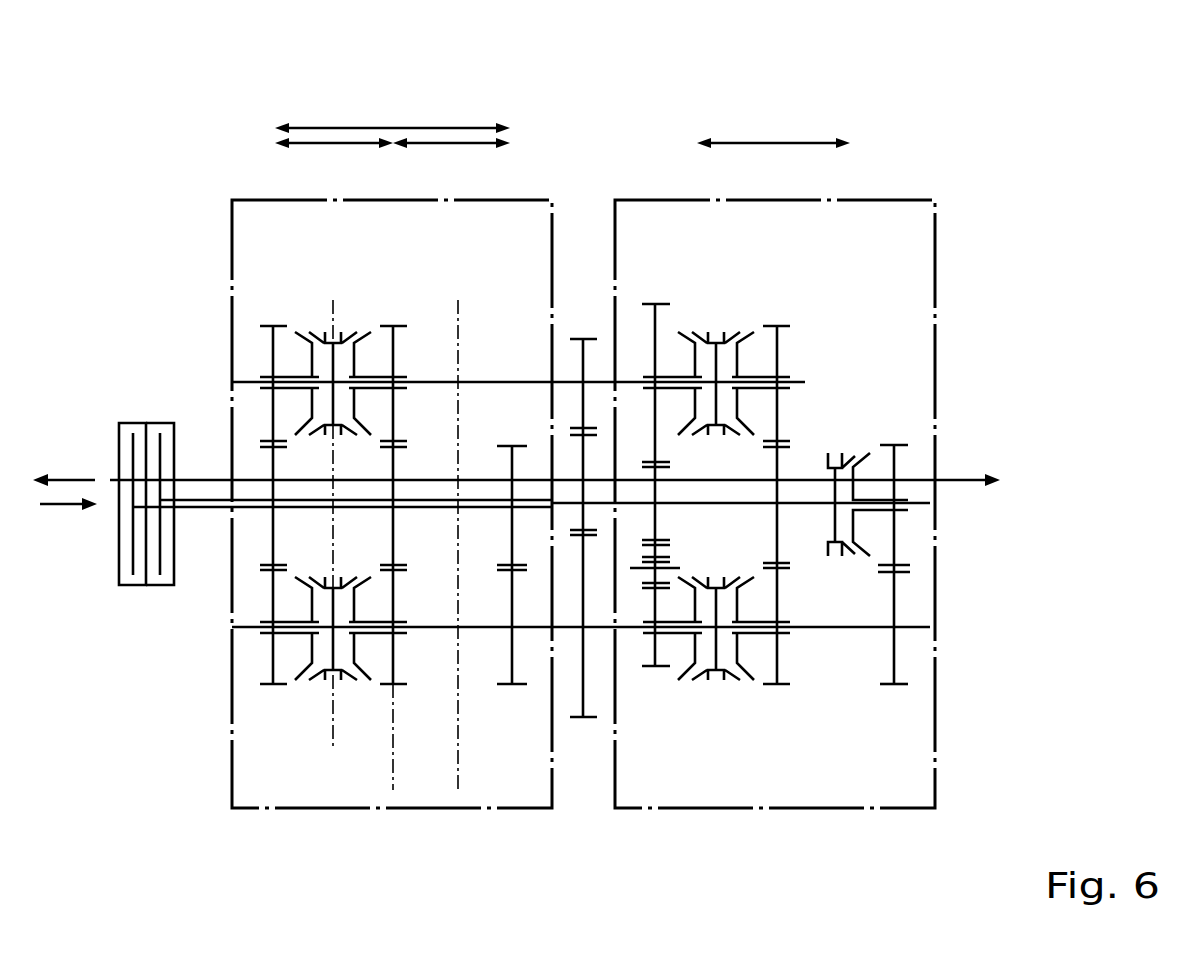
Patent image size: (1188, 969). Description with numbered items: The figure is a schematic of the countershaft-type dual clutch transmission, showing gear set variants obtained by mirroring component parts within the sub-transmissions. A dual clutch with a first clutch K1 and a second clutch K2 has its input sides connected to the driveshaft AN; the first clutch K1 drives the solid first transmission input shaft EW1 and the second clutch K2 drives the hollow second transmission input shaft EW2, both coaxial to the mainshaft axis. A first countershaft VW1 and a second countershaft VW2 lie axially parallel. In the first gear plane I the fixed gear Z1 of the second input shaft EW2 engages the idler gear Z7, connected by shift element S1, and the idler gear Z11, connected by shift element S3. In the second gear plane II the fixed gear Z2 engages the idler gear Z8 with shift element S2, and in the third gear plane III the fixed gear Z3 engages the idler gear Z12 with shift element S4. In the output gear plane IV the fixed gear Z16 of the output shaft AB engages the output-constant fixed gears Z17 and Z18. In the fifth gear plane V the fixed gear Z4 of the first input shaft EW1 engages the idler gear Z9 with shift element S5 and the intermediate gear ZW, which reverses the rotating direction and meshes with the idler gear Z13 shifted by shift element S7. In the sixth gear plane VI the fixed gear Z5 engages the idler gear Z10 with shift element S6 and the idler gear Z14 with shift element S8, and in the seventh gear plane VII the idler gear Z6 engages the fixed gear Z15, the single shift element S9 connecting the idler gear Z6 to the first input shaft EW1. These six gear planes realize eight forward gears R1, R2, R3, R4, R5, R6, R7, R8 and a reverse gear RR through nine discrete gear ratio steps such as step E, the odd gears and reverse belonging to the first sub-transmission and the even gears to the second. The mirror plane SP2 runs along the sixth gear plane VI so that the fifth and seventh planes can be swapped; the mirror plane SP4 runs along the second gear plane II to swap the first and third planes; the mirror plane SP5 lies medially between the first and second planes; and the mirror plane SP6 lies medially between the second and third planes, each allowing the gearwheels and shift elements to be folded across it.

The first clutch K1 is at (127, 402).
The second clutch K2 is at (160, 402).
The first transmission input shaft EW1 is at (552, 477).
The second transmission input shaft EW2 is at (223, 505).
The first countershaft VW1 is at (480, 380).
The second countershaft VW2 is at (843, 629).
The intermediate gear ZW is at (645, 570).
The output shaft AB is at (910, 478).
The driveshaft AN is at (65, 511).
The fixed gear Z1 is at (273, 535).
The fixed gear Z2 is at (385, 686).
The fixed gear Z3 is at (510, 532).
The fixed gear Z4 is at (655, 530).
The fixed gear Z5 is at (855, 560).
The idler gear Z6 is at (897, 527).
The idler gear Z7 is at (263, 325).
The idler gear Z8 is at (398, 325).
The idler gear Z9 is at (665, 325).
The idler gear Z10 is at (785, 355).
The idler gear Z11 is at (267, 687).
The idler gear Z12 is at (511, 686).
The idler gear Z13 is at (657, 668).
The idler gear Z14 is at (775, 686).
The fixed gear Z15 is at (896, 686).
The fixed gear Z16 is at (580, 465).
The fixed gear Z17 is at (585, 335).
The fixed gear Z18 is at (580, 718).
The mirror plane SP2 is at (740, 330).
The mirror plane SP4 is at (395, 530).
The mirror plane SP5 is at (335, 298).
The mirror plane SP6 is at (458, 775).
The shift element S1 is at (302, 315).
The shift element S2 is at (362, 315).
The shift element S3 is at (304, 697).
The shift element S4 is at (362, 697).
The shift element S5 is at (686, 317).
The shift element S6 is at (745, 317).
The shift element S7 is at (688, 693).
The shift element S8 is at (744, 693).
The single shift element S9 is at (850, 489).
The forward gear R1 is at (655, 290).
The forward gear R2 is at (512, 700).
The forward gear R3 is at (894, 700).
The forward gear R4 is at (393, 308).
The forward gear R5 is at (777, 700).
The forward gear R6 is at (273, 700).
The forward gear R7 is at (777, 308).
The forward gear R8 is at (273, 308).
The reverse gear RR is at (655, 684).
The gear ratio step E is at (894, 205).
The first gear plane I is at (272, 182).
The second gear plane II is at (393, 182).
The third gear plane III is at (512, 290).
The output gear plane IV is at (583, 290).
The fifth gear plane V is at (655, 182).
The sixth gear plane VI is at (776, 182).
The seventh gear plane VII is at (893, 182).